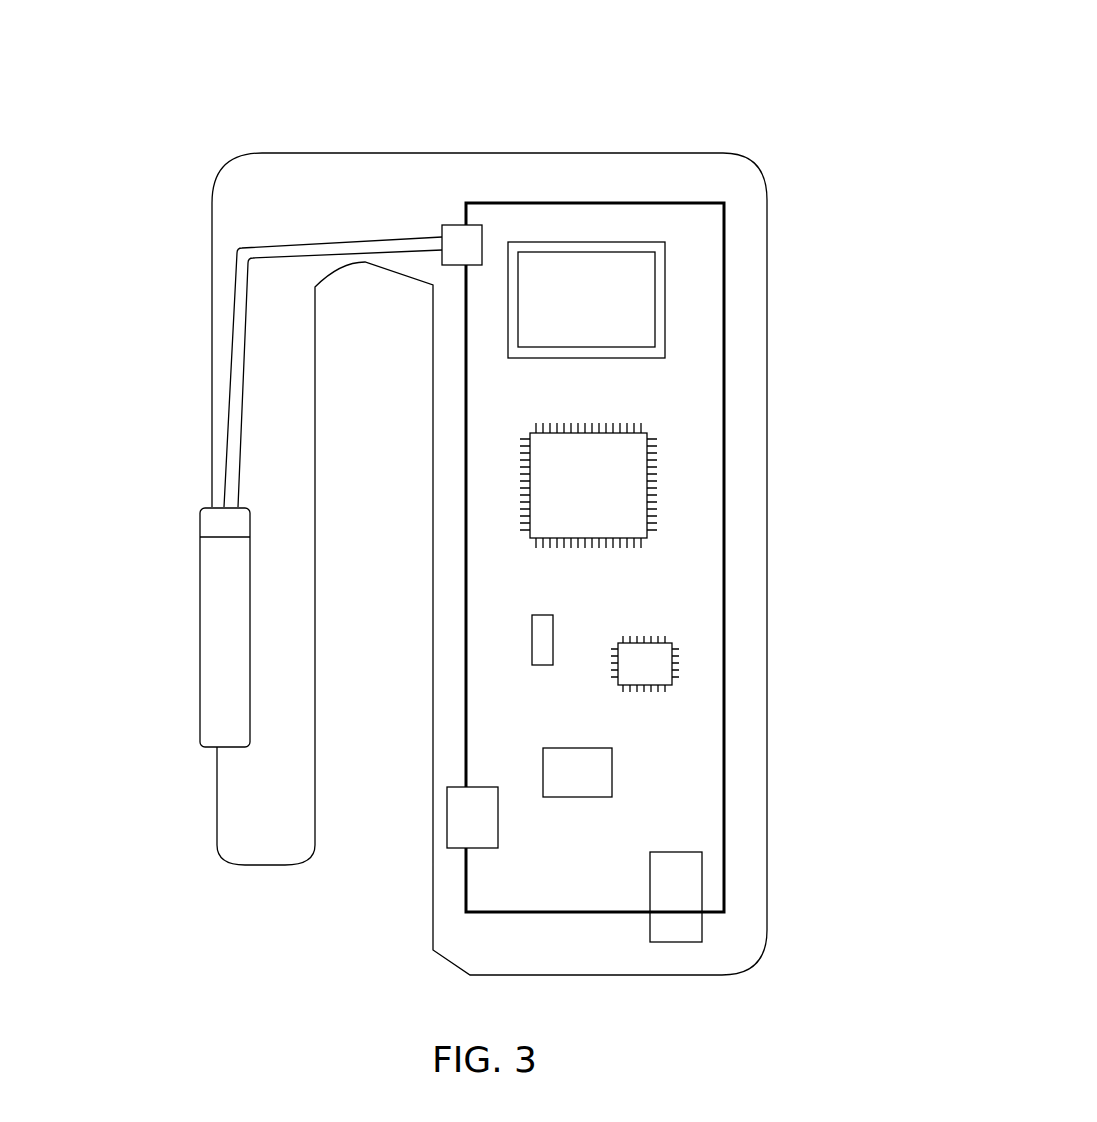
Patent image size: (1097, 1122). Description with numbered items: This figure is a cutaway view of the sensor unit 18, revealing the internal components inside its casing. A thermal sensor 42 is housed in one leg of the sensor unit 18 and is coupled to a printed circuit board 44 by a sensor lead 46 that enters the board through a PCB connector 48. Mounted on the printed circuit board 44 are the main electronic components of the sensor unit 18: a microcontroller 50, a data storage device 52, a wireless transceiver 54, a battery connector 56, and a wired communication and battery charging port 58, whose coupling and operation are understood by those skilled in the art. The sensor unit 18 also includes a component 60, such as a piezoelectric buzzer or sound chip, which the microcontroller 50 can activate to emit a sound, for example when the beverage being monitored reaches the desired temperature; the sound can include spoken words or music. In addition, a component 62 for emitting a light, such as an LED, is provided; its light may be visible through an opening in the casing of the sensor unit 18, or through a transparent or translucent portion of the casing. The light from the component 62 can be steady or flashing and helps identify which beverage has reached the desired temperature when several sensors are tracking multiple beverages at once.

The sensor unit 18 is at (738, 136).
The thermal sensor 42 is at (213, 629).
The printed circuit board 44 is at (688, 257).
The sensor lead 46 is at (270, 248).
The PCB connector 48 is at (455, 242).
The microcontroller 50 is at (632, 467).
The data storage device 52 is at (645, 672).
The wireless transceiver 54 is at (638, 320).
The battery connector 56 is at (472, 833).
The wired communication and battery charging port 58 is at (667, 893).
The sound-emitting component 60 is at (603, 775).
The light-emitting component 62 is at (540, 638).